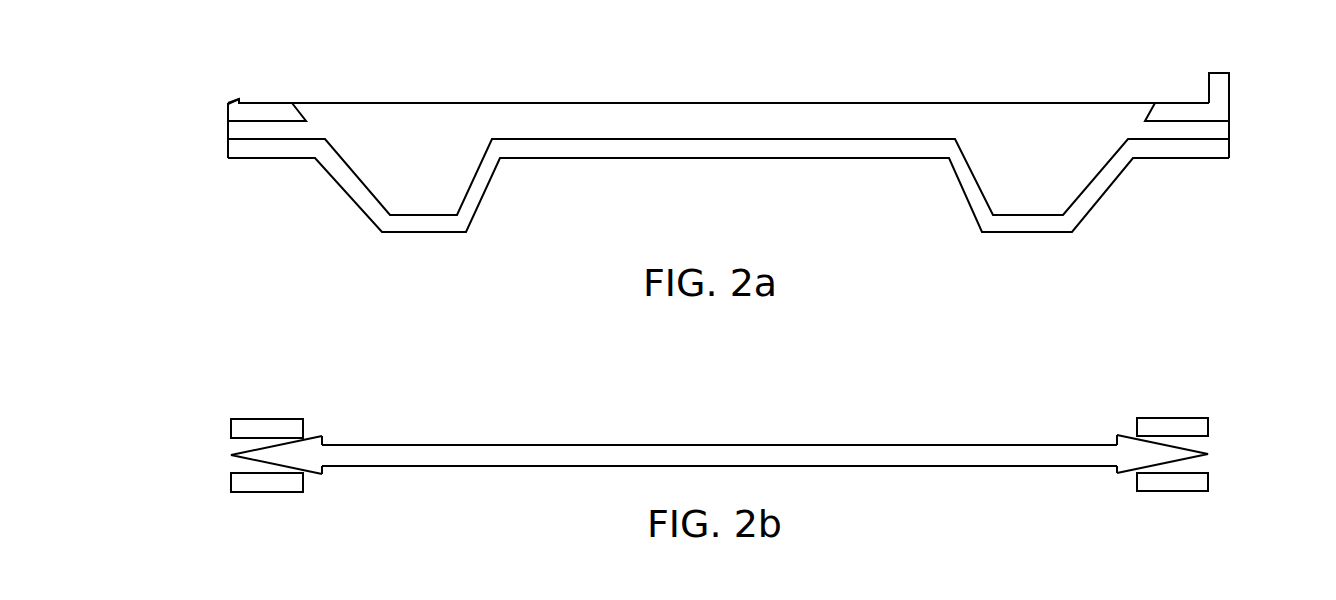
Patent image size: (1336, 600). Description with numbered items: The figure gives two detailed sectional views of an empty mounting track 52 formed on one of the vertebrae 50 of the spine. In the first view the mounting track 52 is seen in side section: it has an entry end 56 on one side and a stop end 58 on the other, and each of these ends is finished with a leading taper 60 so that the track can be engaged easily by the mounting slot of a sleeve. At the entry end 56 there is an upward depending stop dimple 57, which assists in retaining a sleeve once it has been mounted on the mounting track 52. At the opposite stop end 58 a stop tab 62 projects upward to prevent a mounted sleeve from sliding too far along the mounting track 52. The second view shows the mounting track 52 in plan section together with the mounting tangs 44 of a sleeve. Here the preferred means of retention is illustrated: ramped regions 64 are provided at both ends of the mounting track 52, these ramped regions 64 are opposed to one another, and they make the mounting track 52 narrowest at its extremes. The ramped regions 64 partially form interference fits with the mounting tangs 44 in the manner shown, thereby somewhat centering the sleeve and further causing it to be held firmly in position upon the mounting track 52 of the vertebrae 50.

In FIG. 2B, the mounting tangs 44 is at (253, 418).
In FIG. 2A, the vertebrae 50 is at (432, 183).
In FIG. 2A, the mounting track 52 is at (682, 103).
In FIG. 2B, the mounting track 52 is at (686, 445).
In FIG. 2A, the entry end 56 is at (228, 128).
In FIG. 2B, the entry end 56 is at (231, 454).
In FIG. 2A, the stop dimple 57 is at (241, 99).
In FIG. 2A, the stop end 58 is at (1229, 130).
In FIG. 2B, the stop end 58 is at (1209, 453).
In FIG. 2A, the leading taper 60 is at (237, 99).
In FIG. 2A, the stop tab 62 is at (1222, 80).
In FIG. 2B, the ramped regions 64 is at (308, 437).